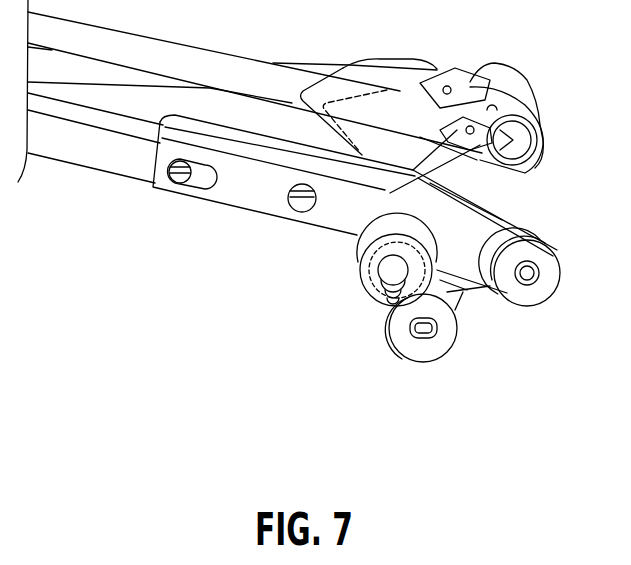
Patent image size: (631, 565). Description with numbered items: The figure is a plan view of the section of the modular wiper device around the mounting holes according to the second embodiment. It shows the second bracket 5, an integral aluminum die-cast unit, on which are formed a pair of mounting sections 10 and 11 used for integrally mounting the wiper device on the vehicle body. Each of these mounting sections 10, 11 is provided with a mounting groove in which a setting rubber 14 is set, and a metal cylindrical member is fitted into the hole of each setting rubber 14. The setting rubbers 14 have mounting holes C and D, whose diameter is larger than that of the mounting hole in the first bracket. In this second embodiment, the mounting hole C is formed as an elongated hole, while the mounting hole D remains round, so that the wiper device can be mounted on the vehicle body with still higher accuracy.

The second bracket 5 is at (227, 210).
The mounting section 10 is at (390, 312).
The mounting section 11 is at (473, 241).
The setting rubber 14 is at (432, 346).
The mounting hole C is at (412, 332).
The mounting hole D is at (533, 276).